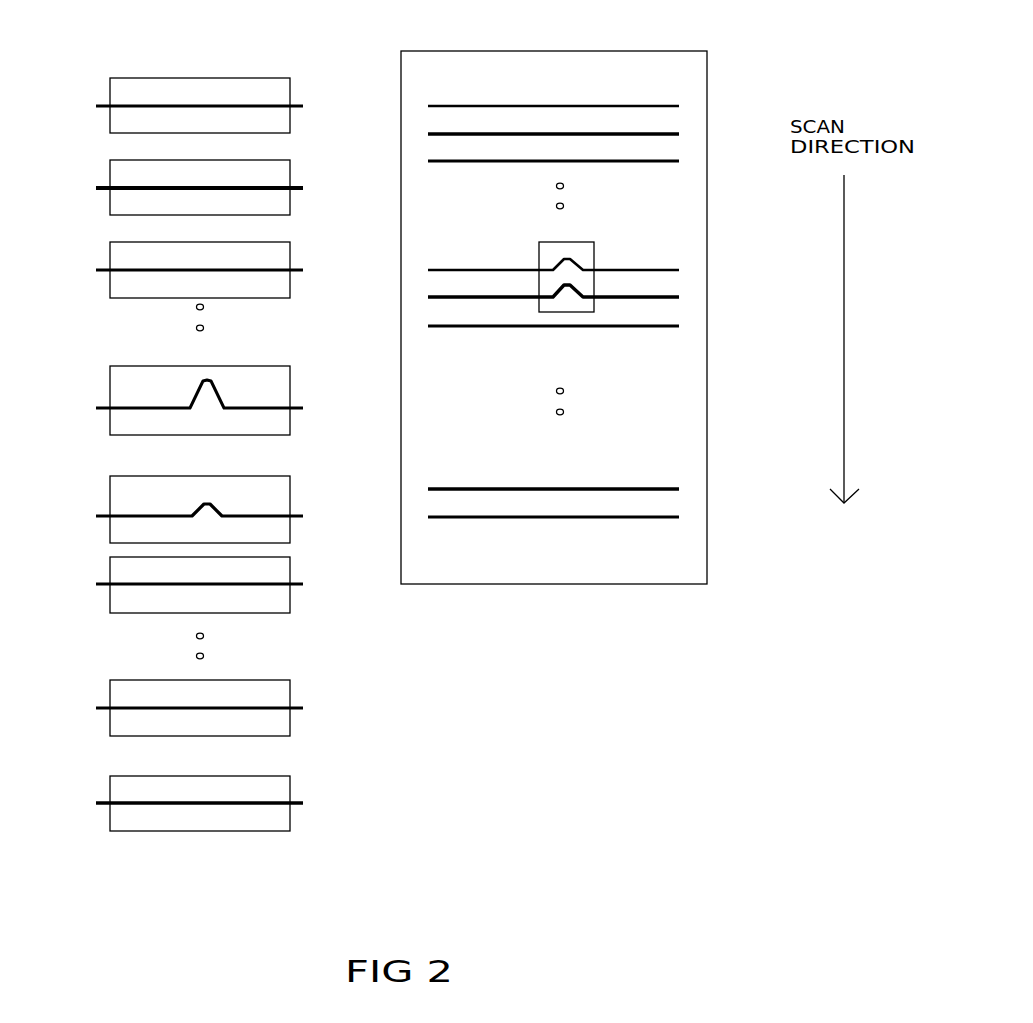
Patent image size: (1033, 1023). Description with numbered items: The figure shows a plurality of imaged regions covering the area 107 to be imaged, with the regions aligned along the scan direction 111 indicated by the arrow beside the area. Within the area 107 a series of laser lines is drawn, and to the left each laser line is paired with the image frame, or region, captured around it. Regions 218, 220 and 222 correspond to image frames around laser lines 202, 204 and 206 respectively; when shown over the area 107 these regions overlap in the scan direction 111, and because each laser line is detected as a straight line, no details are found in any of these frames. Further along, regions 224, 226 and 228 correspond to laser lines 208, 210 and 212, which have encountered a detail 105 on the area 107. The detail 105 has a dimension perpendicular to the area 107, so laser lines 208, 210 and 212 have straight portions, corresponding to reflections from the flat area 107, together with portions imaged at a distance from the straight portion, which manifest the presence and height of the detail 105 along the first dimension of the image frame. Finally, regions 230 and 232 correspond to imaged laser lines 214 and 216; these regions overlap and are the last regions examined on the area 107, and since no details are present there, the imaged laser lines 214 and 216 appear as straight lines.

The detail 105 is at (602, 265).
The area 107 is at (554, 298).
The scan direction 111 is at (873, 339).
The laser line 202 is at (595, 99).
The laser line 204 is at (595, 126).
The laser line 206 is at (595, 154).
The laser line 208 is at (595, 265).
The laser line 210 is at (595, 292).
The laser line 212 is at (595, 319).
The imaged laser line 214 is at (595, 484).
The imaged laser line 216 is at (595, 512).
The region 218 is at (416, 106).
The region 220 is at (416, 134).
The region 222 is at (416, 161).
The region 224 is at (416, 271).
The region 226 is at (416, 298).
The region 228 is at (416, 326).
The region 230 is at (415, 489).
The region 232 is at (415, 517).